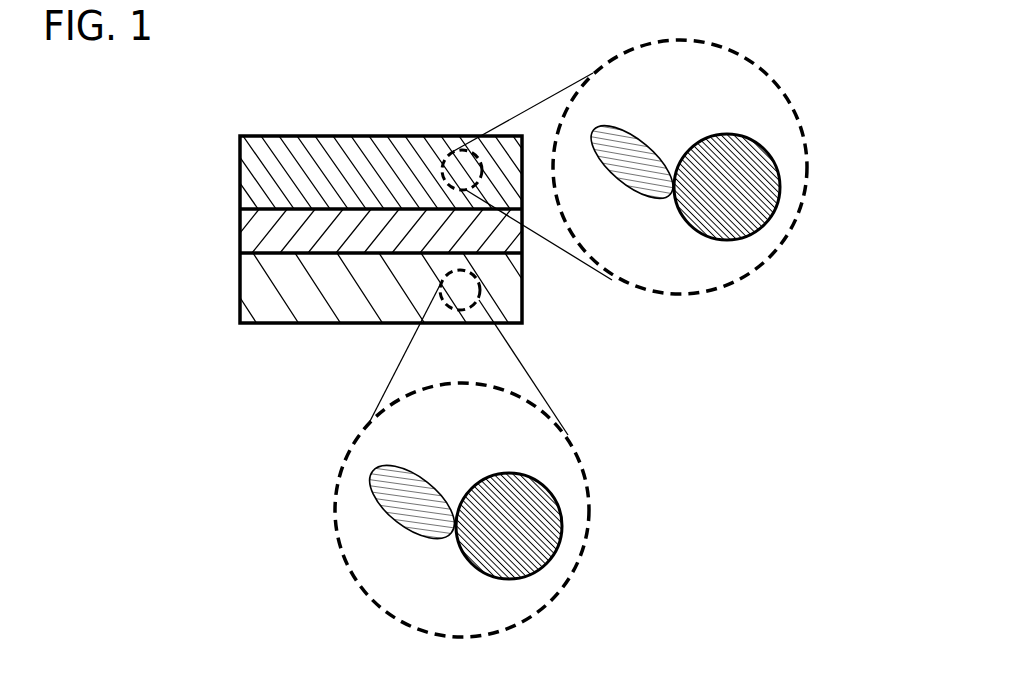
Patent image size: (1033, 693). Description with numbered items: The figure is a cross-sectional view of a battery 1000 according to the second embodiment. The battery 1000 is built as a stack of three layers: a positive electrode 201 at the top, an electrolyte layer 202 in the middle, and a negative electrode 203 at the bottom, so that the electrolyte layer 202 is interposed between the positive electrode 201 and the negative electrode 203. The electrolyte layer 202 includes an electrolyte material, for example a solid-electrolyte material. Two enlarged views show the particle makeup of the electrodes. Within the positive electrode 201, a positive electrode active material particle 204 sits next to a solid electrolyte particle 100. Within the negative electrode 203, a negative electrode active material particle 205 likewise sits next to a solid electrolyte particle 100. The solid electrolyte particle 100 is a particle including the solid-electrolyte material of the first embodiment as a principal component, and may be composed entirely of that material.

The battery 1000 is at (420, 84).
The positive electrode 201 is at (275, 156).
The electrolyte layer 202 is at (270, 228).
The negative electrode 203 is at (275, 290).
The positive electrode active material particle 204 is at (747, 186).
The negative electrode active material particle 205 is at (527, 523).
The solid electrolyte particle 100 is at (650, 178).